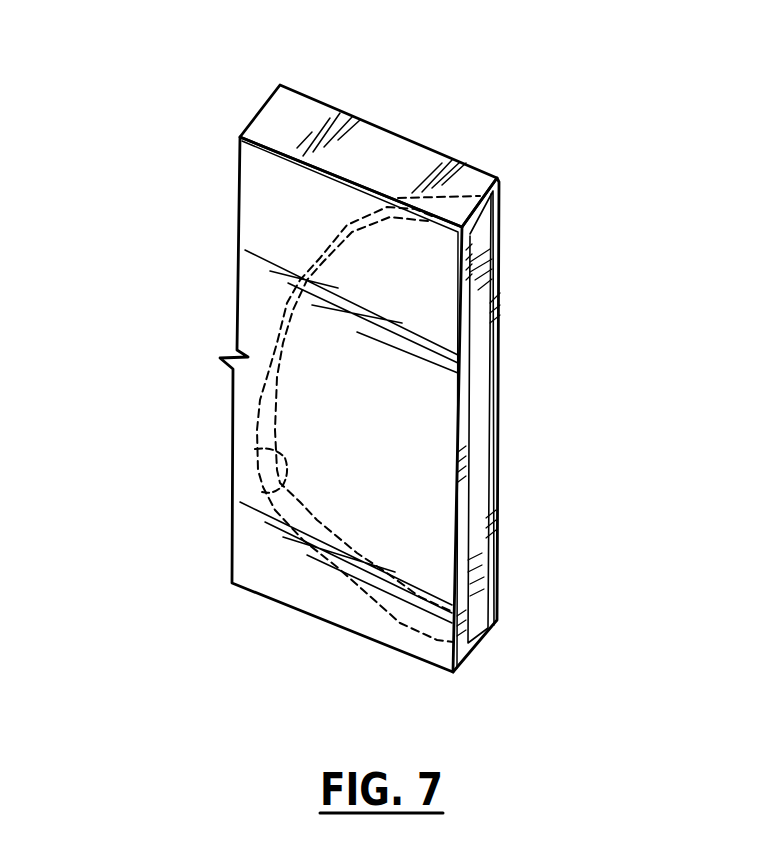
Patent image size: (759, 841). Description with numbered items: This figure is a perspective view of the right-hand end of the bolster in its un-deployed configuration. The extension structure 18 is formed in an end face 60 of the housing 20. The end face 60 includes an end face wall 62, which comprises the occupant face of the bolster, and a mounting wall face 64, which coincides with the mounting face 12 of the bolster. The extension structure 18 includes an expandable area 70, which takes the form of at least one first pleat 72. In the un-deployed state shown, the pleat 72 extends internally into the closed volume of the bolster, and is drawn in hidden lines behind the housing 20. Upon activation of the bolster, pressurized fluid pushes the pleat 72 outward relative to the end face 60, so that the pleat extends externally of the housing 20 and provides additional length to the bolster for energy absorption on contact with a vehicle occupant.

The mounting face 12 is at (308, 237).
The extension structure 18 is at (426, 351).
The housing 20 is at (363, 120).
The end face 60 is at (500, 184).
The end face wall 62 is at (497, 232).
The mounting wall face 64 is at (467, 345).
The expandable area 70 is at (330, 337).
The first pleat 72 is at (255, 449).